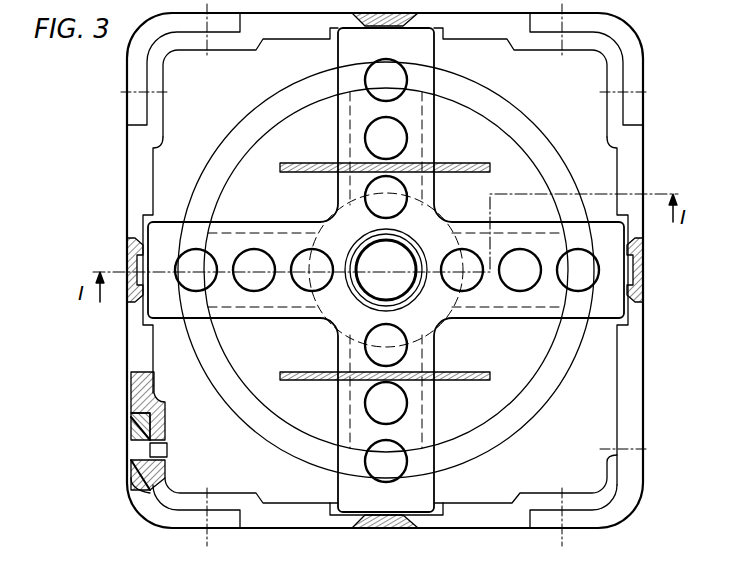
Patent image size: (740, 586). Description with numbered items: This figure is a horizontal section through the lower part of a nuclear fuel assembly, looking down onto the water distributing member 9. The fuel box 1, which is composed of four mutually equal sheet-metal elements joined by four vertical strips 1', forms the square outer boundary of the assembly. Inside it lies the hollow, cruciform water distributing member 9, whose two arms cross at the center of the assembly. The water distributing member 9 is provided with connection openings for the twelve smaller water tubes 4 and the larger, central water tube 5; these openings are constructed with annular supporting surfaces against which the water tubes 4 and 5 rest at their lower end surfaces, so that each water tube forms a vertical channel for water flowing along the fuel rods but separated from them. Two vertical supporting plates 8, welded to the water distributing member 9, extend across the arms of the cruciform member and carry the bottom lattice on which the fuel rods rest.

The fuel box 1 is at (397, 275).
The vertical strips 1' is at (404, 270).
The smaller water tubes 4 is at (585, 277).
The central water tube 5 is at (405, 283).
The vertical supporting plates 8 is at (490, 164).
The water distributing member 9 is at (437, 483).